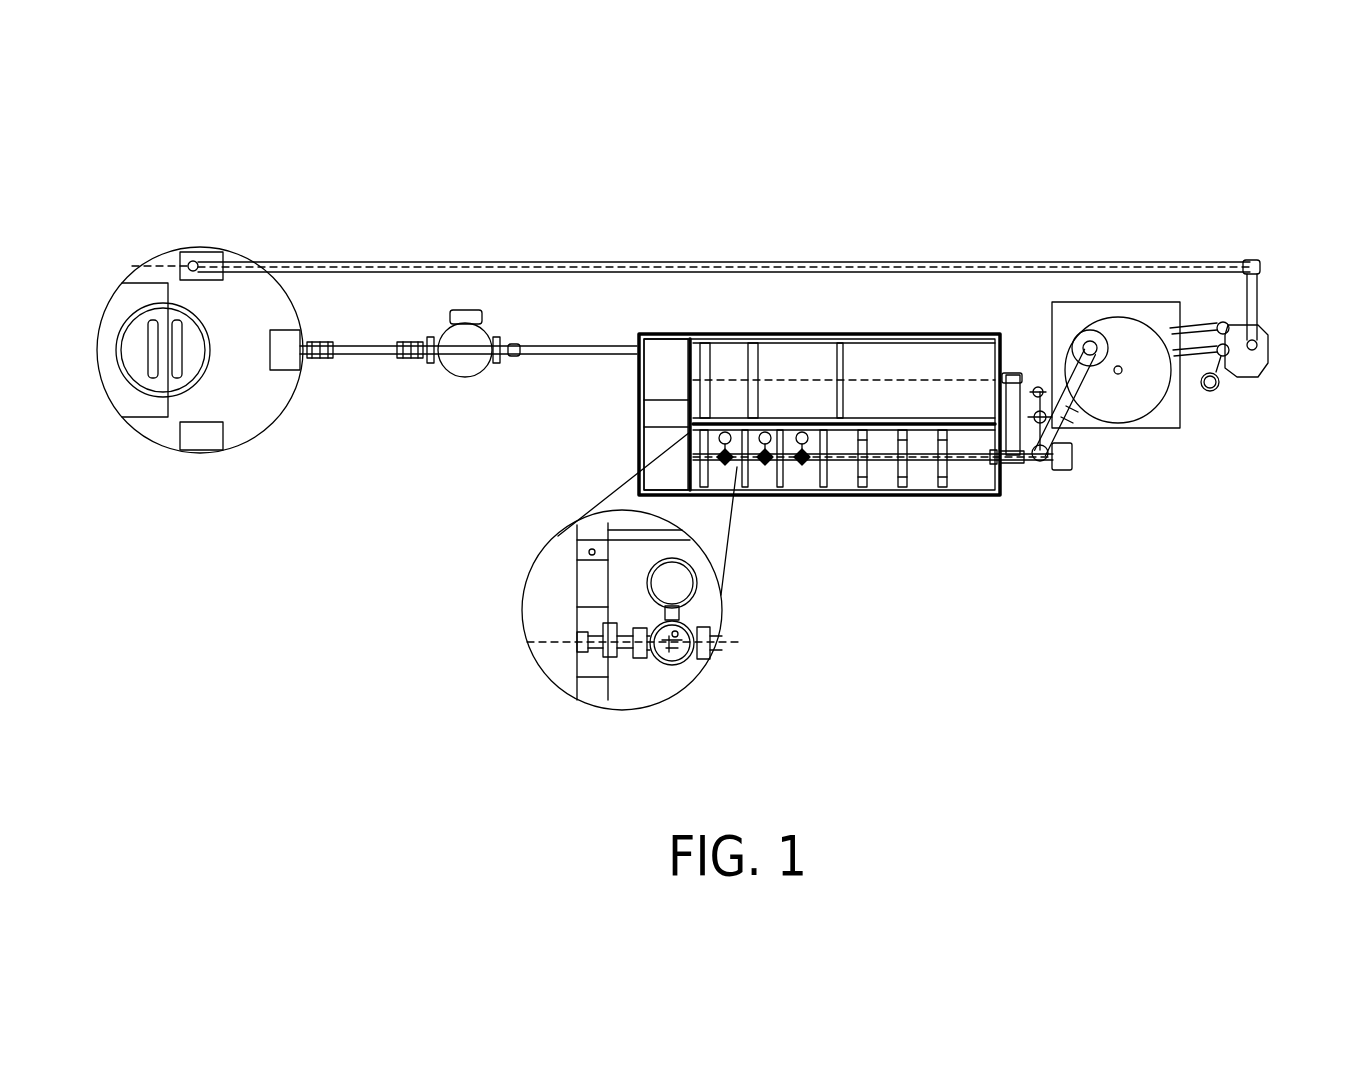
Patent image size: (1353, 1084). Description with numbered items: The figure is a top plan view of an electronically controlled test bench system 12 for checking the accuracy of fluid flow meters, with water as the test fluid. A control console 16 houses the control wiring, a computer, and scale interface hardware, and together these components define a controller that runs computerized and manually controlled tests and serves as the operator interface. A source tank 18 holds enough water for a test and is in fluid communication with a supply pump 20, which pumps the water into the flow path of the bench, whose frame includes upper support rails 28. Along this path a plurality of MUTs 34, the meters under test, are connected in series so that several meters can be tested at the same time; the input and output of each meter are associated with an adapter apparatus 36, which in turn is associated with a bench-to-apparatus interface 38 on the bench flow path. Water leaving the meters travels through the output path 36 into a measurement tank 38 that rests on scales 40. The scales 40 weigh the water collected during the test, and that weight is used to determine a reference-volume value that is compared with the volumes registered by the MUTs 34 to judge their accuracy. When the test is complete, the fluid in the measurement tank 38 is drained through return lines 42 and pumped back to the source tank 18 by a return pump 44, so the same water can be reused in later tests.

The test bench system 12 is at (282, 198).
The control console 16 is at (660, 363).
The source tank 18 is at (157, 267).
The supply pump 20 is at (443, 370).
The upper support rails 28 is at (809, 438).
The MUT (meter under test) 34 is at (805, 472).
The output path 36 is at (1063, 430).
The measurement tank 38 is at (1160, 387).
The scales 40 is at (1143, 428).
The return lines 42 is at (1013, 262).
The return pump 44 is at (1260, 340).